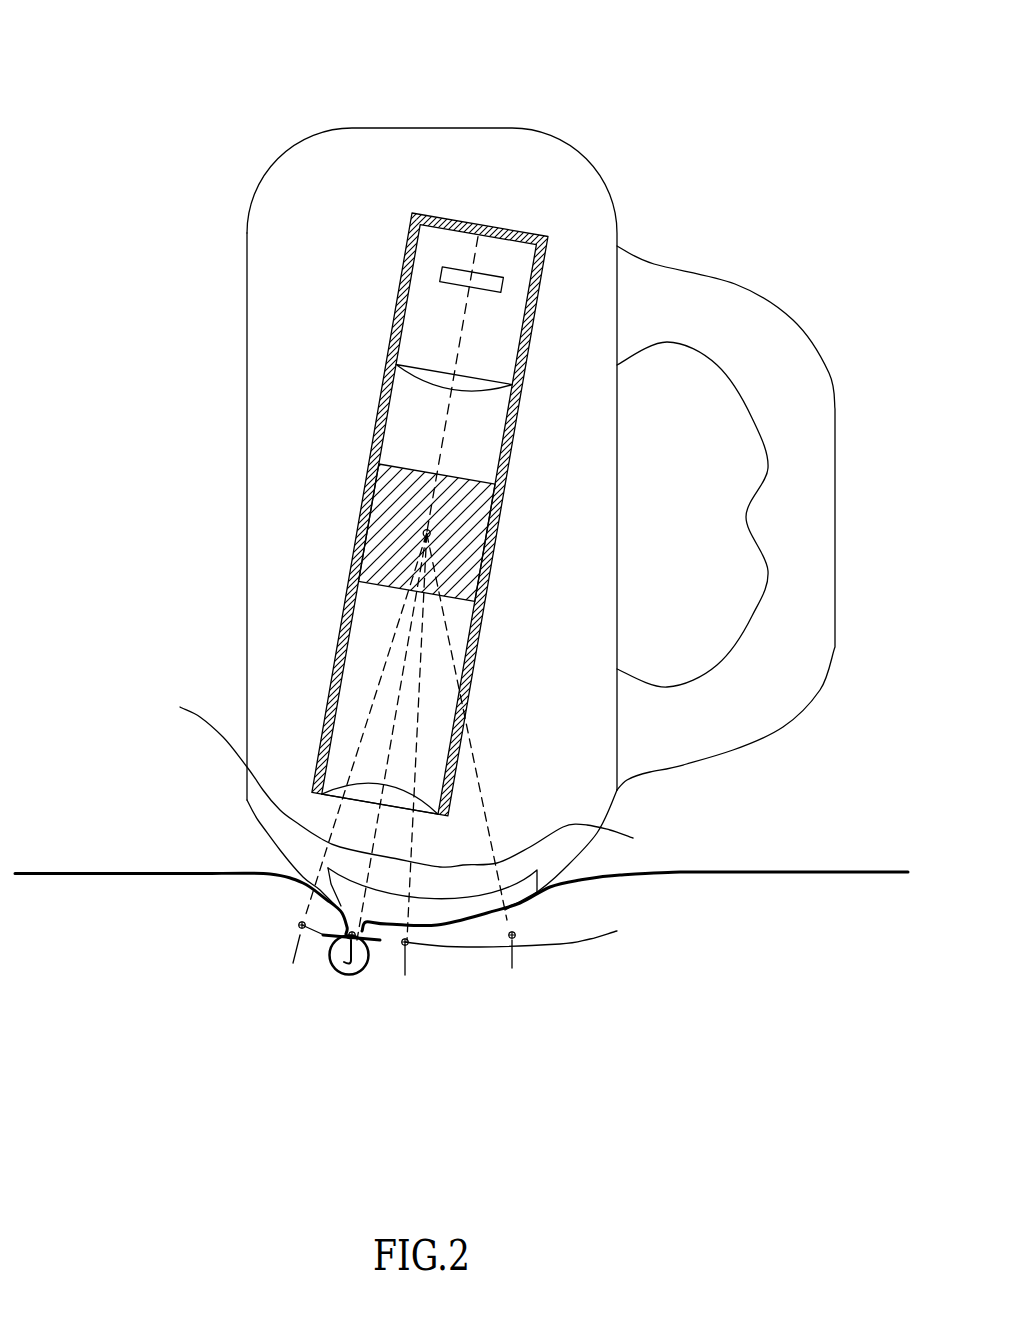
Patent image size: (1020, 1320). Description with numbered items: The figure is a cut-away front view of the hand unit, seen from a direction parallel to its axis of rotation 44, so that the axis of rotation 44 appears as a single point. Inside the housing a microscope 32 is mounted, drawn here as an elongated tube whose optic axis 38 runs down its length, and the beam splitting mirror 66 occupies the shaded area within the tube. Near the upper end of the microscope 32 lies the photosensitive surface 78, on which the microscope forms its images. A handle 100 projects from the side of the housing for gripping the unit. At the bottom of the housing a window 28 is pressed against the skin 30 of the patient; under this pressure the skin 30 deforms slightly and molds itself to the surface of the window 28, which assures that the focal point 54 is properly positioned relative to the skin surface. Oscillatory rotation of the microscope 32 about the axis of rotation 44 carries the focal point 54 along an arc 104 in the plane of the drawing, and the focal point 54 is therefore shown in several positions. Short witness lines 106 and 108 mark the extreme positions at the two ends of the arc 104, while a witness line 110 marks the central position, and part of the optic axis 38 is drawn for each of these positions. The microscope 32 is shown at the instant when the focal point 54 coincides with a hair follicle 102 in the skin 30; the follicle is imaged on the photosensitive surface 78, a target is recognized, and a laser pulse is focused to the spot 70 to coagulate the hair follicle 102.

The microscope 32 is at (482, 185).
The photosensitive surface 78 is at (507, 275).
The optic axis 38 is at (470, 310).
The handle 100 is at (739, 300).
The beam splitting mirror 66 is at (379, 464).
The axis of rotation 44 is at (427, 533).
The window 28 is at (327, 887).
The skin 30 is at (773, 870).
The focal point 54 is at (302, 925).
The arc 104 is at (463, 947).
The hair follicle 102 is at (345, 972).
The spot 70 is at (370, 943).
The witness line 110 is at (407, 950).
The witness line 108 is at (515, 952).
The witness line 106 is at (302, 928).